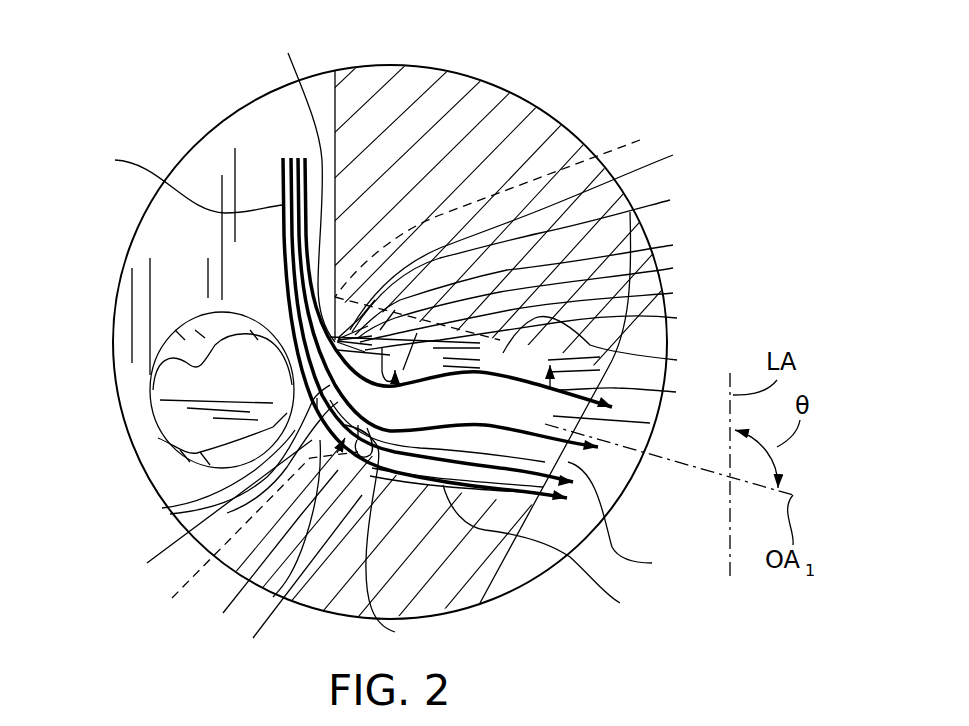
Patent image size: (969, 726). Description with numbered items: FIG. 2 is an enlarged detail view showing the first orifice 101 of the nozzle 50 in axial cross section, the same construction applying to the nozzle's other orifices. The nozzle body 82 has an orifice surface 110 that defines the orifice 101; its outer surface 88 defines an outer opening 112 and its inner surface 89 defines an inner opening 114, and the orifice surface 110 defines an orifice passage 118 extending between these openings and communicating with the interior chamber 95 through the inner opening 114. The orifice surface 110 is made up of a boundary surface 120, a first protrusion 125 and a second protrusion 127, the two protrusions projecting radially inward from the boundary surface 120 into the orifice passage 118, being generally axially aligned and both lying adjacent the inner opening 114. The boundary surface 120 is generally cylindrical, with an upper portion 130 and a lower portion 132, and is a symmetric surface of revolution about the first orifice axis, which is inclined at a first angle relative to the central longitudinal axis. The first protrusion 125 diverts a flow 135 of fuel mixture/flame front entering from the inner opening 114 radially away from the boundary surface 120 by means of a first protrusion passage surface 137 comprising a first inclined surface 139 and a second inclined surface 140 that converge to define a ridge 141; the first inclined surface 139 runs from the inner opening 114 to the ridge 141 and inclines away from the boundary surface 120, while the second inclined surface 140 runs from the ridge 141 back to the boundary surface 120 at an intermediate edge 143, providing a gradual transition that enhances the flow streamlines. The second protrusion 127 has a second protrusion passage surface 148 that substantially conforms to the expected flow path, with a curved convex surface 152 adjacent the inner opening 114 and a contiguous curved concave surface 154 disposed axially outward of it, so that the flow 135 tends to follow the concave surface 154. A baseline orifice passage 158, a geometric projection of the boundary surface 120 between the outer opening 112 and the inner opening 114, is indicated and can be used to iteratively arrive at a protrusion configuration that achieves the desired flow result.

The nozzle 50 is at (107, 112).
The nozzle body 82 is at (530, 135).
The outer surface 88 is at (510, 556).
The inner surface 89 is at (162, 508).
The interior chamber 95 is at (168, 242).
The first orifice 101 is at (665, 440).
The orifice surface 110 is at (483, 412).
The outer opening 112 is at (586, 407).
The inner opening 114 is at (222, 495).
The orifice passage 118 is at (538, 310).
The boundary surface 120 is at (634, 391).
The first protrusion 125 is at (535, 281).
The second protrusion 127 is at (259, 553).
The upper portion 130 is at (541, 327).
The lower portion 132 is at (357, 535).
The flow 135 is at (177, 179).
The first protrusion passage surface 137 is at (531, 236).
The first inclined surface 139 is at (296, 183).
The second inclined surface 140 is at (537, 295).
The ridge 141 is at (532, 255).
The intermediate edge 143 is at (610, 352).
The second protrusion passage surface 148 is at (291, 579).
The convex surface 152 is at (205, 511).
The concave surface 154 is at (390, 538).
The baseline orifice passage 158 is at (397, 364).